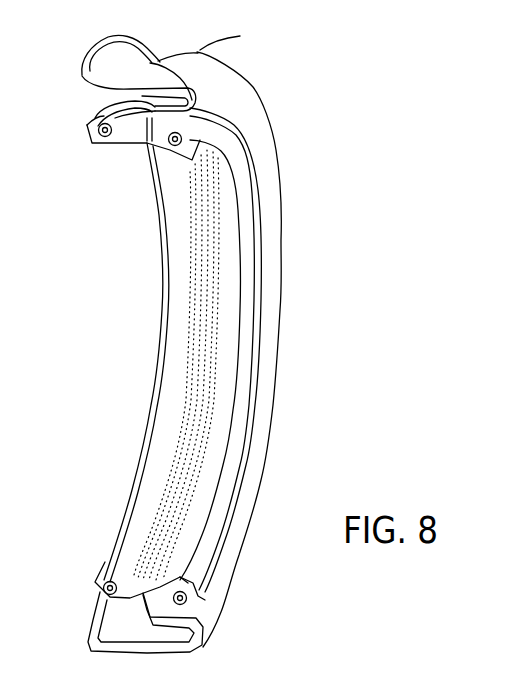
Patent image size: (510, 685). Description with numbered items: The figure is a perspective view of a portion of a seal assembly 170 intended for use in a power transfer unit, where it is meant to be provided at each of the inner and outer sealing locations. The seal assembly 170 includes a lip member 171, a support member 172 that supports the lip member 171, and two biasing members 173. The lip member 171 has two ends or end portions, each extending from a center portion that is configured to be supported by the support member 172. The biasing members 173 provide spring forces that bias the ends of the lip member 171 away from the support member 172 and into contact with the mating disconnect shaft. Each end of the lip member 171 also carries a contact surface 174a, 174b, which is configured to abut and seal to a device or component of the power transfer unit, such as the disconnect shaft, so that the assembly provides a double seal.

The seal assembly 170 is at (310, 163).
The lip member 171 is at (120, 138).
The support member 172 is at (200, 50).
The biasing member 173 is at (93, 143).
The contact surface 174a is at (153, 373).
The contact surface 174b is at (237, 343).